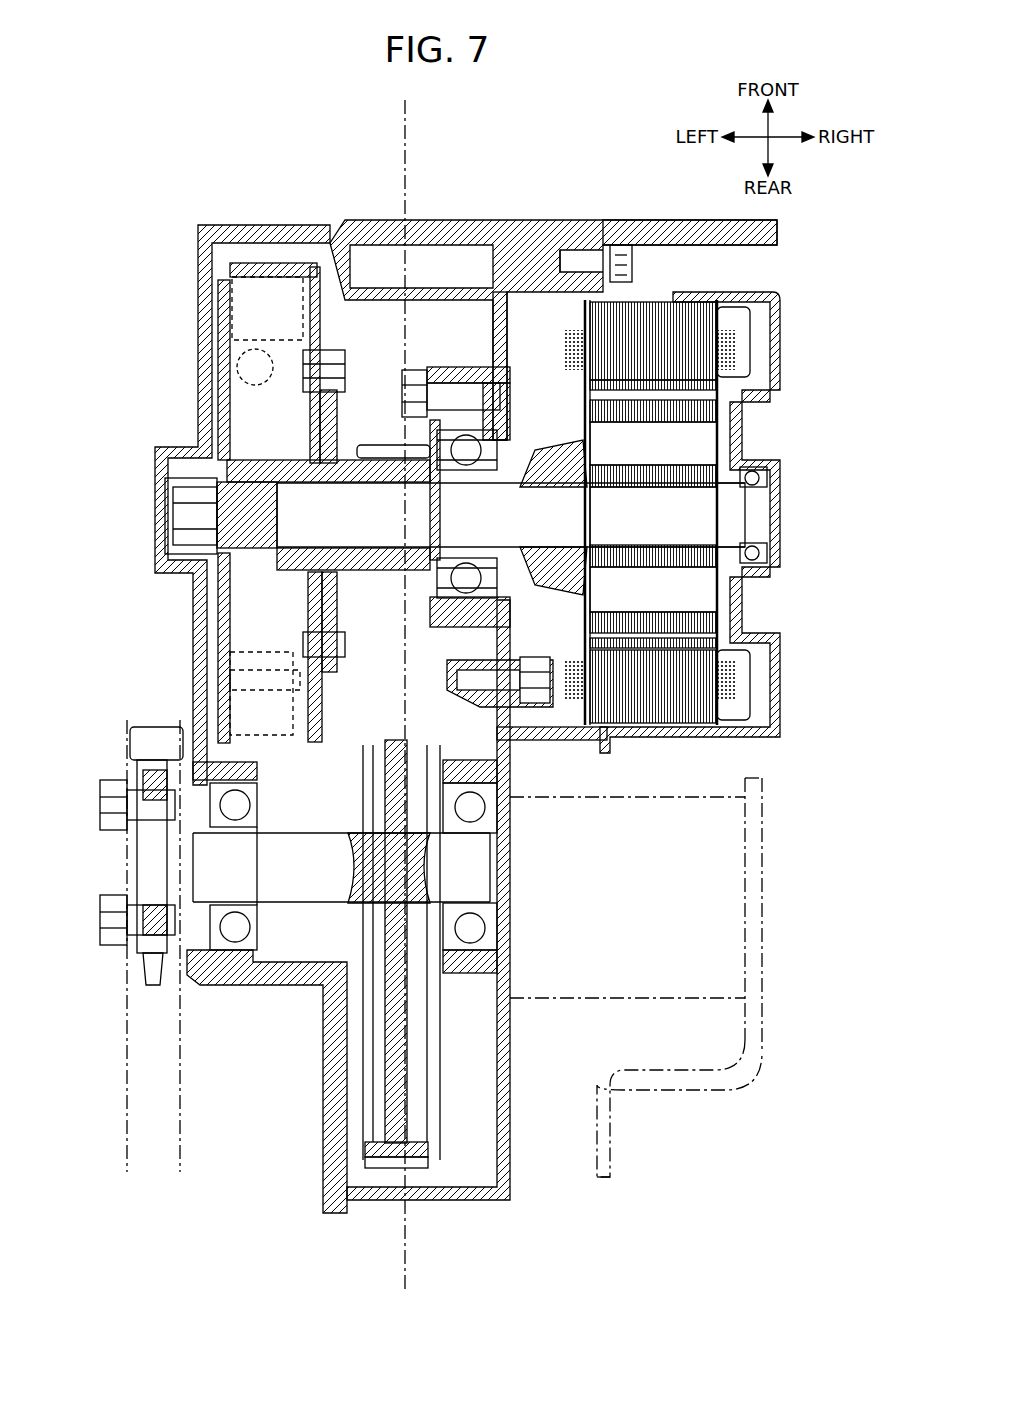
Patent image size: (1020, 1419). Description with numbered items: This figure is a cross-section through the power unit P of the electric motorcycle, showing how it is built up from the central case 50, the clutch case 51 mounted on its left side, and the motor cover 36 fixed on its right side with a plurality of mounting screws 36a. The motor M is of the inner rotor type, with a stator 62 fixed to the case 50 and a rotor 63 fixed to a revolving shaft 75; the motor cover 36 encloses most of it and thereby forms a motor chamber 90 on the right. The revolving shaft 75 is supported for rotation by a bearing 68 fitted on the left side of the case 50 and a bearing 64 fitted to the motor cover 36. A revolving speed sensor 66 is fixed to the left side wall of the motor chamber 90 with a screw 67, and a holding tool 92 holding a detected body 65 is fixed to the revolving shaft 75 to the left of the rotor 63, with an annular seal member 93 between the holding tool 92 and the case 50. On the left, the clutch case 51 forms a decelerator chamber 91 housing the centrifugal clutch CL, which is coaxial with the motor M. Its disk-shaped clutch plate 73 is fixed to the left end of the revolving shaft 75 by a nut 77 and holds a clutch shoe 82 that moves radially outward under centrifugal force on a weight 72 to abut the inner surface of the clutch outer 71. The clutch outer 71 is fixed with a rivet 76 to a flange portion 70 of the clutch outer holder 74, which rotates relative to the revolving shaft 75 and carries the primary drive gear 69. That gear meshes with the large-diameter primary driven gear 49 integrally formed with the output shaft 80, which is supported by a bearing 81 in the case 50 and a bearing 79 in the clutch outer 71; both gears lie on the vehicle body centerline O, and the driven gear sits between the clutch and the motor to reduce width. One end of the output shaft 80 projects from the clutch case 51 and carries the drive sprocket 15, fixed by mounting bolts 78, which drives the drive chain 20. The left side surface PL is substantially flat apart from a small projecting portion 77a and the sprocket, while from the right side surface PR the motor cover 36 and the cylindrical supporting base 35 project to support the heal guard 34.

The drive sprocket 15 is at (140, 965).
The drive chain 20 is at (127, 1070).
The heal guard 34 is at (765, 905).
The supporting base 35 is at (710, 797).
The motor cover 36 is at (782, 340).
The mounting screw 36a is at (635, 262).
The primary driven gear 49 is at (395, 1060).
The case 50 is at (562, 232).
The clutch case 51 is at (268, 232).
The stator 62 is at (690, 348).
The rotor 63 is at (700, 410).
The bearing 64 is at (765, 480).
The detected body 65 is at (620, 562).
The revolving speed sensor 66 is at (640, 608).
The screw 67 is at (548, 705).
The bearing 68 is at (464, 448).
The primary drive gear 69 is at (382, 445).
The flange portion 70 is at (330, 300).
The clutch outer 71 is at (243, 266).
The weight 72 is at (252, 358).
The clutch plate 73 is at (225, 382).
The clutch outer holder 74 is at (285, 465).
The revolving shaft 75 is at (290, 560).
The rivet 76 is at (310, 645).
The nut 77 is at (180, 522).
The projecting portion 77a is at (160, 478).
The mounting bolt 78 is at (100, 805).
The bearing 79 is at (235, 930).
The output shaft 80 is at (302, 870).
The bearing 81 is at (480, 930).
The clutch shoe 82 is at (215, 740).
The motor chamber 90 is at (530, 335).
The decelerator chamber 91 is at (437, 318).
The holding tool 92 is at (620, 458).
The seal member 93 is at (503, 490).
The centrifugal clutch CL is at (220, 268).
The left side surface PL is at (182, 282).
The right side surface PR is at (520, 1115).
The power unit P is at (527, 140).
The vehicle body centerline O is at (412, 128).
The motor M is at (760, 675).